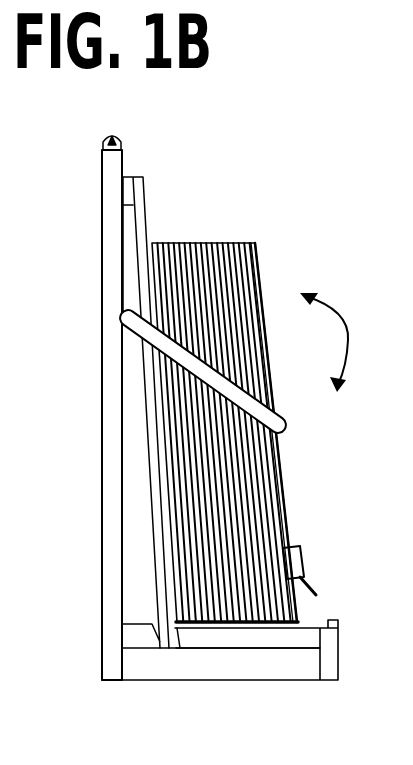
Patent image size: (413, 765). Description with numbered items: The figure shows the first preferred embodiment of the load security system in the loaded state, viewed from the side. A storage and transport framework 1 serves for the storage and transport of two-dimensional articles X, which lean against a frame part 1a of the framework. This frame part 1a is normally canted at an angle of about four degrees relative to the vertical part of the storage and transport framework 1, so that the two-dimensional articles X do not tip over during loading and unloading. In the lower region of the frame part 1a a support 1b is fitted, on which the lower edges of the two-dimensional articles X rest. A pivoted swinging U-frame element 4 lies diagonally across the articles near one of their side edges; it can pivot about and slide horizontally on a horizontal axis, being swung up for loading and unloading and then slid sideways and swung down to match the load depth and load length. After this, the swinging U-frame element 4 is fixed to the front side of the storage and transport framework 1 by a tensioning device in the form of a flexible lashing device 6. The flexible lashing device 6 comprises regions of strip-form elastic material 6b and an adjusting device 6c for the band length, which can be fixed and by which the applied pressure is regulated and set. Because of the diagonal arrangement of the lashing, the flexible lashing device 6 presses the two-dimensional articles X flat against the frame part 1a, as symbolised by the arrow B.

The storage and transport framework 1 is at (115, 157).
The frame part 1a is at (146, 199).
The support 1b is at (238, 632).
The two-dimensional articles X is at (232, 258).
The swinging U-frame element 4 is at (240, 389).
The flexible lashing device 6 is at (291, 532).
The strip-form elastic material 6b is at (288, 482).
The adjusting device 6c is at (305, 560).
The arrow B is at (353, 330).